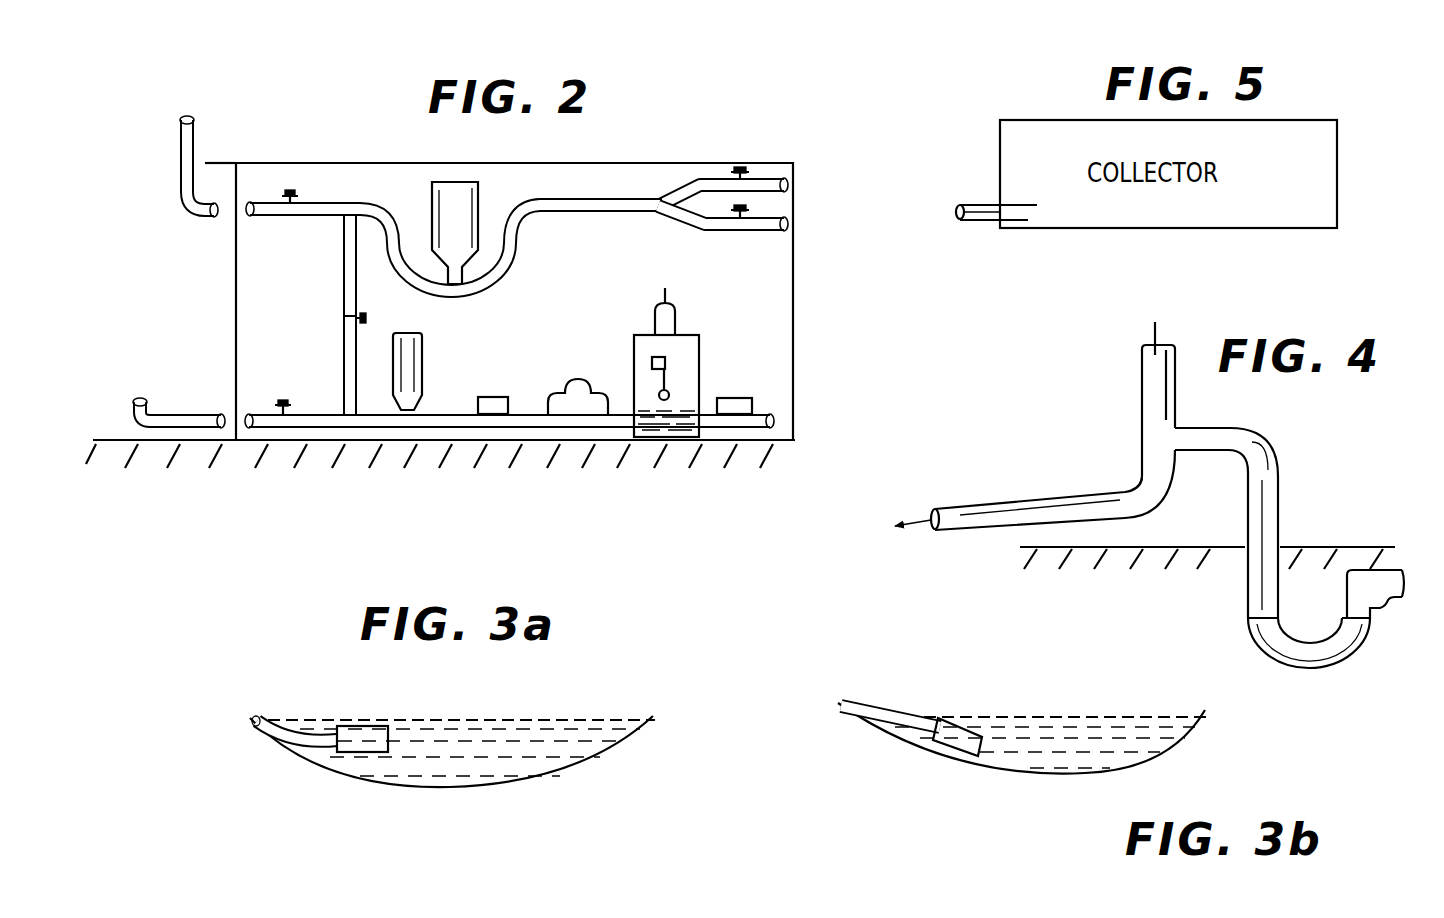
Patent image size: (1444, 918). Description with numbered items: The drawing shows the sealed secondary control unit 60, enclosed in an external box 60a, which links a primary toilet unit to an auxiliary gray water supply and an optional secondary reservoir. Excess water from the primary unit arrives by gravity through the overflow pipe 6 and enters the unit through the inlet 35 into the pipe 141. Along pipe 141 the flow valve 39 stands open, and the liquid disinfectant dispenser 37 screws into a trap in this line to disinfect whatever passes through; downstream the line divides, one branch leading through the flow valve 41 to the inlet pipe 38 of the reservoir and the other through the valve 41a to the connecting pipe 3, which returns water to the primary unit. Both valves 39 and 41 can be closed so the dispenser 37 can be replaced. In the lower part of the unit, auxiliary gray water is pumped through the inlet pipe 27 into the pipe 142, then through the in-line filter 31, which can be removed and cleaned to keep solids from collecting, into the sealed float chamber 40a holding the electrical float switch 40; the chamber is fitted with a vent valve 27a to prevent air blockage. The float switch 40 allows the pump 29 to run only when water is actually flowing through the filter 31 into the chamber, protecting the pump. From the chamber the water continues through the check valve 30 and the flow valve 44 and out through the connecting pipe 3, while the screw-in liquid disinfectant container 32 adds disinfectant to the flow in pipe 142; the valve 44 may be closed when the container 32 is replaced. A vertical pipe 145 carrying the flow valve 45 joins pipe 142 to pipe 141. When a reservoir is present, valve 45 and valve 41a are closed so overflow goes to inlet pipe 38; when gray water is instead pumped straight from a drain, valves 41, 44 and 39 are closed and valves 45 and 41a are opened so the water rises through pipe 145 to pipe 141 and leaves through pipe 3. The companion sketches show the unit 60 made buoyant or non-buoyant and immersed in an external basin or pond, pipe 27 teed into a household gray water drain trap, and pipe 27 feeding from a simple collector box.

In FIG. 2, the overflow pipe 6 is at (187, 100).
In FIG. 2, the external box 60a is at (234, 163).
In FIG. 2, the inlet 35 is at (236, 218).
In FIG. 2, the flow valve 39 is at (288, 222).
In FIG. 2, the pipe 145 is at (343, 258).
In FIG. 2, the liquid disinfectant dispenser 37 is at (455, 233).
In FIG. 2, the pipe 141 is at (581, 216).
In FIG. 2, the secondary unit 60 is at (652, 163).
In FIG. 3A, the secondary unit 60 is at (343, 746).
In FIG. 3B, the secondary unit 60 is at (950, 742).
In FIG. 2, the valve 41a is at (751, 178).
In FIG. 2, the connecting pipe 3 is at (140, 395).
In FIG. 3A, the connecting pipe 3 is at (250, 714).
In FIG. 3B, the connecting pipe 3 is at (835, 700).
In FIG. 2, the inlet pipe 38 is at (791, 223).
In FIG. 2, the flow valve 41 is at (740, 232).
In FIG. 2, the flow valve 45 is at (342, 320).
In FIG. 2, the liquid disinfectant container 32 is at (402, 370).
In FIG. 2, the flow valve 44 is at (283, 402).
In FIG. 2, the pipe 142 is at (432, 412).
In FIG. 2, the check valve 30 is at (500, 397).
In FIG. 2, the pump 29 is at (578, 397).
In FIG. 2, the vent valve 27a is at (680, 316).
In FIG. 2, the float chamber 40a is at (702, 357).
In FIG. 2, the float switch 40 is at (653, 378).
In FIG. 2, the in-line filter 31 is at (735, 398).
In FIG. 2, the inlet pipe 27 is at (778, 419).
In FIG. 4, the inlet pipe 27 is at (940, 507).
In FIG. 5, the inlet pipe 27 is at (956, 212).